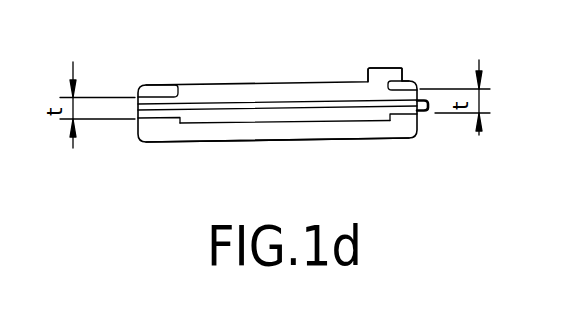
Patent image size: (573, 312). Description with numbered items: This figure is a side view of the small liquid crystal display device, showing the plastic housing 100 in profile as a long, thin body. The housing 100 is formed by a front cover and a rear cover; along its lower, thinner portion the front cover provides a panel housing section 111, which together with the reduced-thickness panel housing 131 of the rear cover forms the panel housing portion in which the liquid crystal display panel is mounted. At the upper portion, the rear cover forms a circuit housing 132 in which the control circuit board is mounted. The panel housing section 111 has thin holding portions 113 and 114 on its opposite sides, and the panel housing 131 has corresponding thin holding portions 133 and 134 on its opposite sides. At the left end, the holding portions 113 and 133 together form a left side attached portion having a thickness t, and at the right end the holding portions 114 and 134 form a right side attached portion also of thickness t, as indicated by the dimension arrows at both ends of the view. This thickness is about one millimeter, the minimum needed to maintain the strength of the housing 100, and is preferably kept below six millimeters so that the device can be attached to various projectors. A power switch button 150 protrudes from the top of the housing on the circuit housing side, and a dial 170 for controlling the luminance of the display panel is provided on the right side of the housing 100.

The housing 100 is at (201, 81).
The panel housing section 111 is at (288, 100).
The thin holding portion 113 is at (158, 88).
The thin holding portion 114 is at (408, 85).
The panel housing 131 is at (330, 122).
The circuit housing 132 is at (227, 141).
The thin holding portion 133 is at (168, 119).
The thin holding portion 134 is at (403, 113).
The power switch button 150 is at (410, 38).
The dial 170 is at (427, 115).